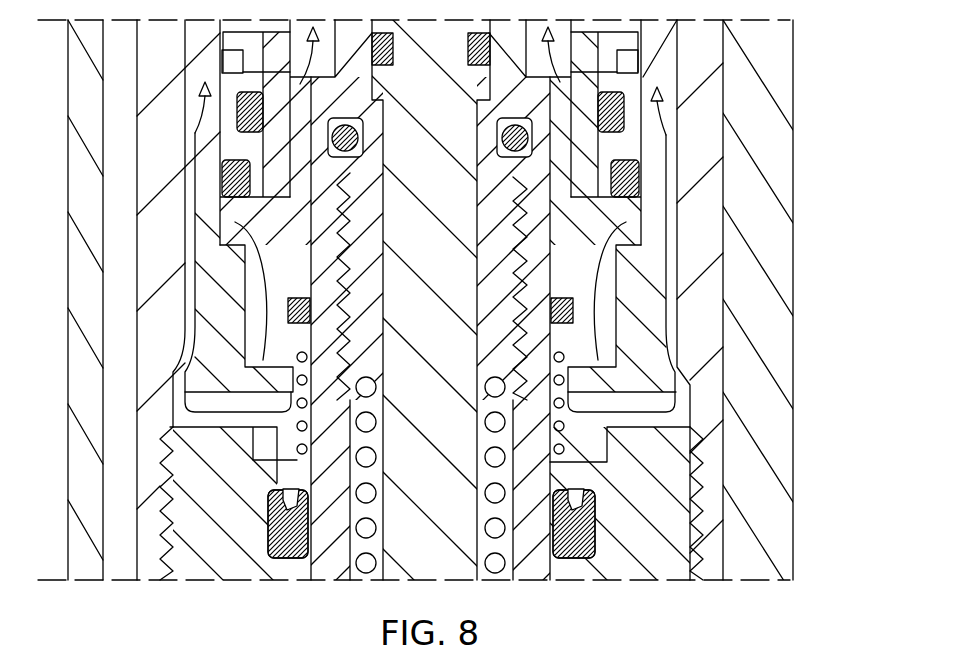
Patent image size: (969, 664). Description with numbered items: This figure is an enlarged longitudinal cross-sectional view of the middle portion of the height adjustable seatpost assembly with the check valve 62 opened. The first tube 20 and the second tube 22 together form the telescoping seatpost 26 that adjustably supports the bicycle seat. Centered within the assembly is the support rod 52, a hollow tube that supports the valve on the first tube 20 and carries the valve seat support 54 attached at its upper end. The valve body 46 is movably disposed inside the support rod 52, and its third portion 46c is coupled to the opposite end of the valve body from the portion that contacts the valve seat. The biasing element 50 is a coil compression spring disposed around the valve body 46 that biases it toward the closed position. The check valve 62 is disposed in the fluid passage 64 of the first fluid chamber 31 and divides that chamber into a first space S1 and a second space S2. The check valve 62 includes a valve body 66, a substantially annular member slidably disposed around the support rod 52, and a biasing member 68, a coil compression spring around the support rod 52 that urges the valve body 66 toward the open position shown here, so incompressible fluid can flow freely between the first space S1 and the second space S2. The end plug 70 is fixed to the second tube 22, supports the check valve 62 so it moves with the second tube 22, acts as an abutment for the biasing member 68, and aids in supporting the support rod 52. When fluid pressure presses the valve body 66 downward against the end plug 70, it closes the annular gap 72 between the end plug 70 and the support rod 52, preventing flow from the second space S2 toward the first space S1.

The first tube 20 is at (803, 66).
The second tube 22 is at (733, 170).
The telescoping seatpost 26 is at (842, 95).
The first fluid chamber 31 is at (294, 45).
The valve body 46 is at (376, 438).
The third portion 46c is at (382, 72).
The biasing element 50 is at (500, 492).
The support rod 52 is at (320, 337).
The valve seat support 54 is at (340, 223).
The check valve 62 is at (842, 322).
The fluid passage 64 is at (610, 272).
The valve body 66 is at (575, 330).
The biasing member 68 is at (607, 441).
The end plug 70 is at (650, 543).
The annular gap 72 is at (241, 237).
The first space S1 is at (220, 182).
The second space S2 is at (190, 414).